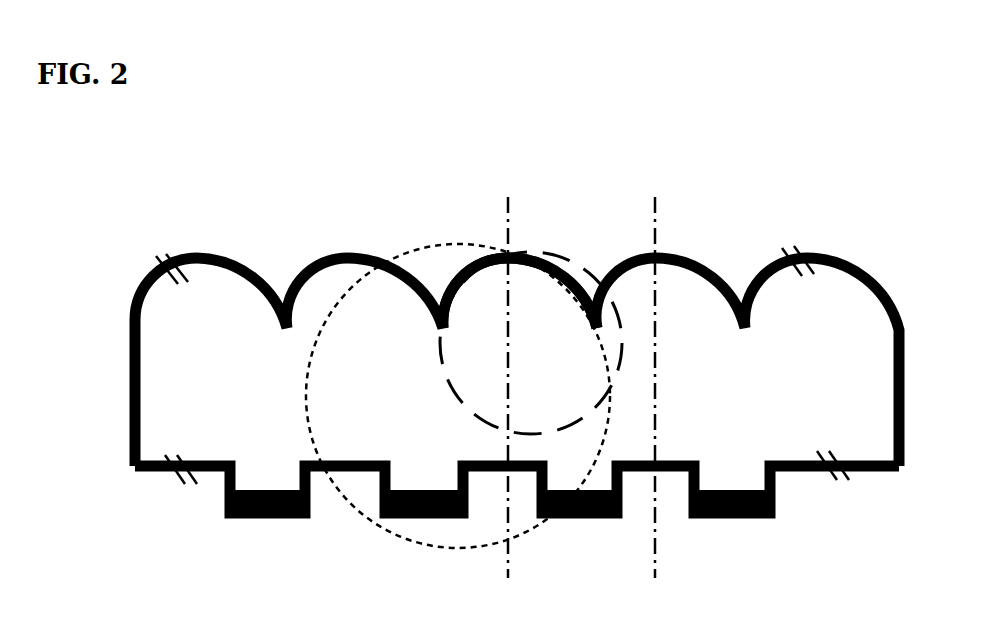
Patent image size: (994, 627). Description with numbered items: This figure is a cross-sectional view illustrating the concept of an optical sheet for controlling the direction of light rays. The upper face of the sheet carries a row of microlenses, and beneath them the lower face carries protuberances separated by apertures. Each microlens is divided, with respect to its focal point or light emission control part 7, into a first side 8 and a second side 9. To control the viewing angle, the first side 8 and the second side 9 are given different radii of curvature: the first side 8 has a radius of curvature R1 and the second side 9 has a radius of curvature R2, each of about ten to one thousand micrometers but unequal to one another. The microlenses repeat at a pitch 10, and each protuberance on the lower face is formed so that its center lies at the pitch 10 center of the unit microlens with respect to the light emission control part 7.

The light emission control part 7 is at (503, 244).
The first side 8 is at (457, 269).
The second side 9 is at (580, 282).
The pitch 10 is at (643, 223).
The radius of curvature of the first side R1 is at (545, 345).
The radius of curvature of the second side R2 is at (455, 397).